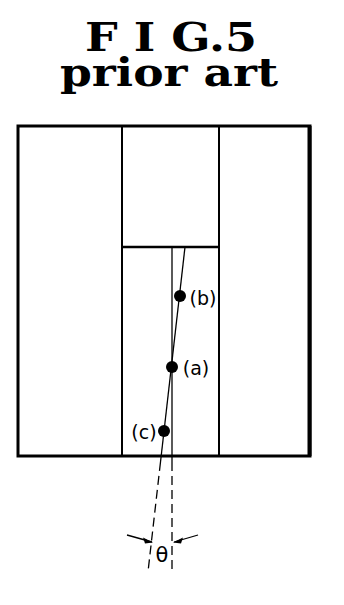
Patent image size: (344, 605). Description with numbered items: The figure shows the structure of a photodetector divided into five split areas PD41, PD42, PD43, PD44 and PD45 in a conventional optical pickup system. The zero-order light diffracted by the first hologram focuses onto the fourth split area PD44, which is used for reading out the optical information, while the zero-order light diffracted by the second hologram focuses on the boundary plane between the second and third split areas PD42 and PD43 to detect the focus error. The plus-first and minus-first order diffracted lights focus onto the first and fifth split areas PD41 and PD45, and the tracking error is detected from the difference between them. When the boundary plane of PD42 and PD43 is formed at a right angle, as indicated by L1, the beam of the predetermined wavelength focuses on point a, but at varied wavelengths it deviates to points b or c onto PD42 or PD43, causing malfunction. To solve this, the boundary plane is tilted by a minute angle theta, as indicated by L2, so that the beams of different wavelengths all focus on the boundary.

The first split area PD41 is at (70, 291).
The second split area PD42 is at (165, 372).
The third split area PD43 is at (187, 320).
The fourth split area PD44 is at (170, 186).
The fifth split area PD45 is at (264, 291).
The right-angle boundary line L1 is at (178, 530).
The tilted boundary line L2 is at (145, 530).